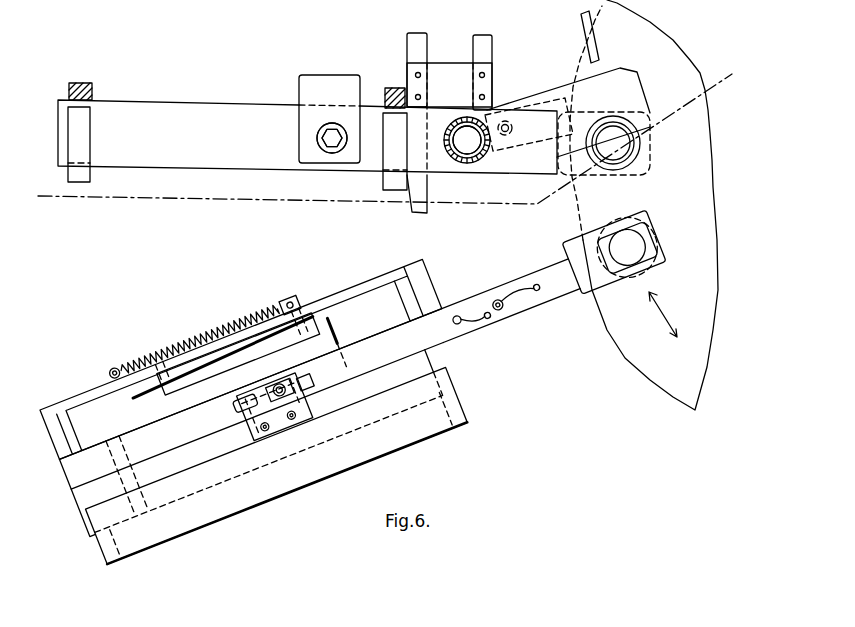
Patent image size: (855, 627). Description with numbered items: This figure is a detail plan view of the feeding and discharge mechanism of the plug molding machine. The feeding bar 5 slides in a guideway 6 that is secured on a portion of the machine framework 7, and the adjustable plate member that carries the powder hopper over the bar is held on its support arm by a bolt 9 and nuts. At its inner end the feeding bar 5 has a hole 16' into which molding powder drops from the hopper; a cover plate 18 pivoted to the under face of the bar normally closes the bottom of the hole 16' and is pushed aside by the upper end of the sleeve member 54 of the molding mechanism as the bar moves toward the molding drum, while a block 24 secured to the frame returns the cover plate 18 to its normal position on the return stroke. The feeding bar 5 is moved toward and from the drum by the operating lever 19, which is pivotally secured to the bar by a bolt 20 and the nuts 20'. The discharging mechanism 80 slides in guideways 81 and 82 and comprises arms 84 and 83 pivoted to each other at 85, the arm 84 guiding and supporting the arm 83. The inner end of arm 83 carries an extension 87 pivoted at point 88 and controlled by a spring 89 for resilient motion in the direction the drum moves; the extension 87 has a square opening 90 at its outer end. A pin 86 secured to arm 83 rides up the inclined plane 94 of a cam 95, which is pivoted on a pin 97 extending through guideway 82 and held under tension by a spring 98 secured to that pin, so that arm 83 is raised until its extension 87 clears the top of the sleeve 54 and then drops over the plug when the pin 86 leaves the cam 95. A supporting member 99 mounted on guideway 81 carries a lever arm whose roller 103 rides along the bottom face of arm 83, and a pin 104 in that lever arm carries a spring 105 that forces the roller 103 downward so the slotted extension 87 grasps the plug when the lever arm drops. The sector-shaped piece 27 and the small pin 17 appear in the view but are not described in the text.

The feeding bar 5 is at (232, 103).
The guideway 6 is at (92, 84).
The machine framework 7 is at (385, 136).
The bolt 9 is at (484, 156).
The hole 16' is at (467, 160).
The pin 17 is at (507, 121).
The cover plate 18 is at (568, 88).
The operating lever 19 is at (331, 77).
The bolt 20 is at (314, 179).
The nuts 20' is at (346, 182).
The block 24 is at (445, 65).
The sector plate 27 is at (706, 178).
The sleeve member 54 is at (640, 146).
The discharging mechanism 80 is at (84, 535).
The guideway 81 is at (141, 553).
The guideway 82 is at (68, 397).
The arm 83 is at (56, 469).
The arm 84 is at (70, 521).
The pivot 85 is at (114, 442).
The pin 86 is at (341, 330).
The extension 87 is at (656, 266).
The pivot point 88 is at (500, 300).
The spring 89 is at (459, 316).
The square opening 90 is at (598, 239).
The inclined plane 94 is at (223, 358).
The cam 95 is at (210, 387).
The pin 97 is at (297, 318).
The spring 98 is at (157, 360).
The supporting member 99 is at (249, 440).
The roller 103 is at (236, 404).
The pin 104 is at (281, 384).
The spring 105 is at (277, 400).